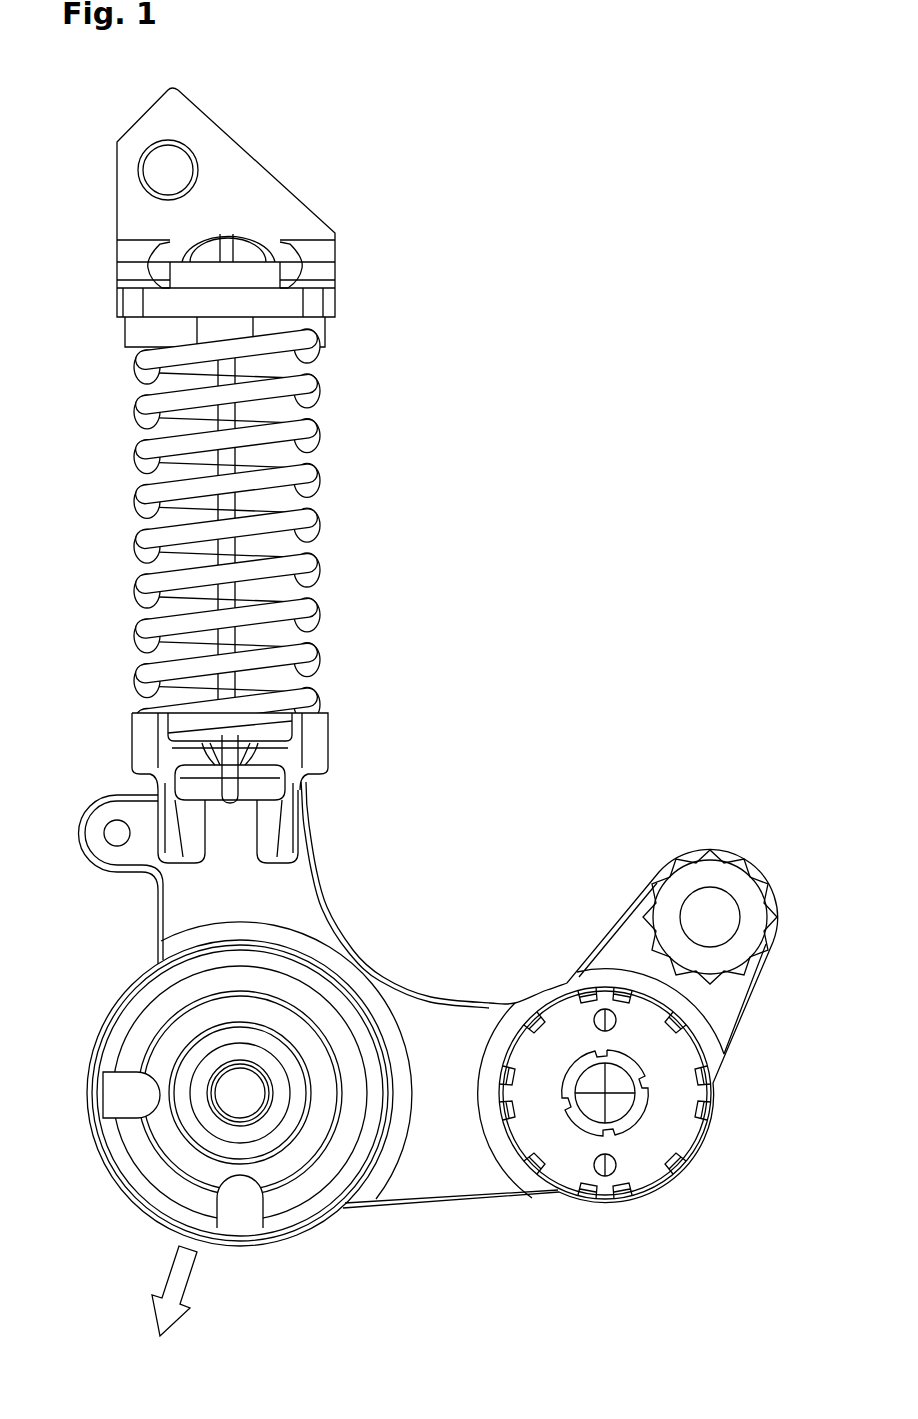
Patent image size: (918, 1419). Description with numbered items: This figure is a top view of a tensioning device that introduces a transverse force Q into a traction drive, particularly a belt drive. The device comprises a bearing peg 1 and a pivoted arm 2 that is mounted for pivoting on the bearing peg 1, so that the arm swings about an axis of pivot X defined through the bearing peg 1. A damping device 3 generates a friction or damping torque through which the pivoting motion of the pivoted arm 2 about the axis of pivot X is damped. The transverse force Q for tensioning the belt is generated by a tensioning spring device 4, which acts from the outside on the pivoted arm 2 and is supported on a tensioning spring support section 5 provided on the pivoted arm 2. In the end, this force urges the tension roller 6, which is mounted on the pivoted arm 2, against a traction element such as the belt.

The bearing peg 1 is at (642, 1103).
The pivoted arm 2 is at (452, 1027).
The damping device 3 is at (732, 1086).
The tensioning spring device 4 is at (360, 542).
The tensioning spring support section 5 is at (337, 806).
The tension roller 6 is at (118, 1040).
The axis of pivot X is at (607, 1085).
The transverse force Q is at (180, 1280).